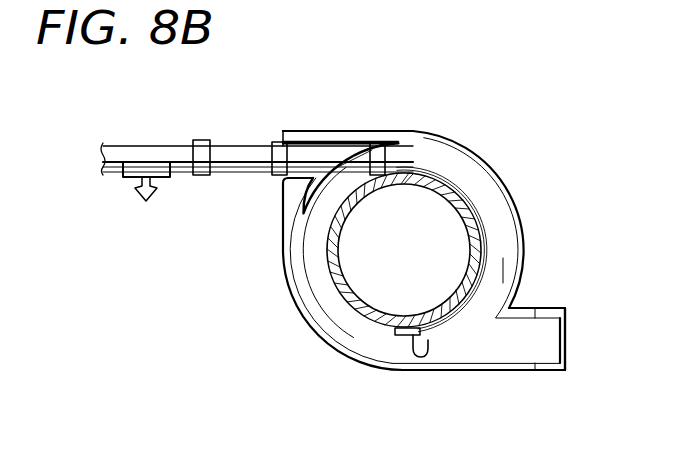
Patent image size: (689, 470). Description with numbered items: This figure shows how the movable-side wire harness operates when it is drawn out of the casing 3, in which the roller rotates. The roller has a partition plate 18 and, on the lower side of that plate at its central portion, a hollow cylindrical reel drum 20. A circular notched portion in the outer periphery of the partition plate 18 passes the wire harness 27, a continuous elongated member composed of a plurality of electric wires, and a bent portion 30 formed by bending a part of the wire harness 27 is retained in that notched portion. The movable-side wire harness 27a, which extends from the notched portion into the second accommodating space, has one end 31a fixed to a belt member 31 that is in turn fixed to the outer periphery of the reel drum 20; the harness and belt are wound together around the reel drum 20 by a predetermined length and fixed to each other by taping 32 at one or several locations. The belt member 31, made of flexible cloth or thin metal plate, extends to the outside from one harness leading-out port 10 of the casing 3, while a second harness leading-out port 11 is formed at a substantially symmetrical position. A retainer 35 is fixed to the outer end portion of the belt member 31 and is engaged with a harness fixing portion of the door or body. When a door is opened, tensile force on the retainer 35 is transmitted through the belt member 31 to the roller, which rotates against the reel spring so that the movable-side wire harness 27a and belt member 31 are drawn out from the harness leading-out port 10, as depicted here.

The casing 3 is at (470, 150).
The harness leading-out port 10 is at (278, 143).
The harness leading-out port 11 is at (556, 357).
The partition plate 18 is at (326, 300).
The reel drum 20 is at (473, 226).
The wire harness 27 is at (334, 140).
The movable-side wire harness 27a is at (500, 283).
The bent portion 30 is at (423, 352).
The belt member 31 is at (245, 173).
The one end 31a is at (398, 337).
The taping 32 is at (200, 140).
The retainer 35 is at (141, 197).